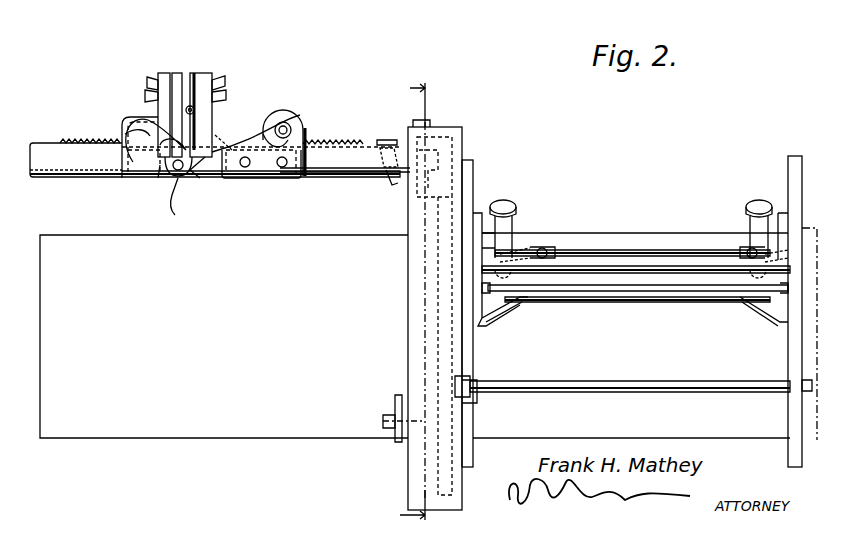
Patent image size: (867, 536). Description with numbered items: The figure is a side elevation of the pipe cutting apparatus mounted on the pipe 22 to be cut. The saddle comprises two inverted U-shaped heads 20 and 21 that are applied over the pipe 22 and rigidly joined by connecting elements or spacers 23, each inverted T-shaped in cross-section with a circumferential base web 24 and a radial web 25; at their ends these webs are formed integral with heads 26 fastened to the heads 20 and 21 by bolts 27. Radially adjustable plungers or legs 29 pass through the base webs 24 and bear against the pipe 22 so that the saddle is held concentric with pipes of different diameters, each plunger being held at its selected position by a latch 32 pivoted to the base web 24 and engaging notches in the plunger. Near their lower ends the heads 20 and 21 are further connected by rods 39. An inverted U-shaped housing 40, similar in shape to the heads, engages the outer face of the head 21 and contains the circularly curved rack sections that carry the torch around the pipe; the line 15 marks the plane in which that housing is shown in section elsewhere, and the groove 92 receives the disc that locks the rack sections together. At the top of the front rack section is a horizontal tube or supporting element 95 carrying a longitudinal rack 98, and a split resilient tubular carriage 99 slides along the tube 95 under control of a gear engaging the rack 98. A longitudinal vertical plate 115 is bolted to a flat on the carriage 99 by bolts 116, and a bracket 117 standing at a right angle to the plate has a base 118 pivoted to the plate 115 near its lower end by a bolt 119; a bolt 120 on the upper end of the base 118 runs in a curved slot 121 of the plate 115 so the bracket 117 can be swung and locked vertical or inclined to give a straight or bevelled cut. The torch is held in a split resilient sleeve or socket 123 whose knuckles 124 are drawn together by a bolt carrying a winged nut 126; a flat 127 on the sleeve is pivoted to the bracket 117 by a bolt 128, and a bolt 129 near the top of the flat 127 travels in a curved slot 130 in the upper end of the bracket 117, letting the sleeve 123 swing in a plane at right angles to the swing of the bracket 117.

The section line 15 is at (401, 301).
The head 20 is at (788, 178).
The head 21 is at (474, 185).
The pipe 22 is at (248, 418).
The connecting elements or spacers 23 is at (631, 284).
The circumferential base web 24 is at (712, 293).
The radial web 25 is at (640, 250).
The heads 26 is at (490, 312).
The bolts 27 is at (498, 300).
The plungers or legs 29 is at (512, 228).
The latch 32 is at (525, 250).
The rods 39 is at (730, 385).
The housing 40 is at (455, 148).
The groove 92 is at (390, 186).
The horizontal tube or supporting element 95 is at (108, 162).
The rack 98 is at (110, 143).
The tubular carriage 99 is at (256, 178).
The longitudinal vertical plate 115 is at (128, 134).
The bolts 116 is at (274, 152).
The bracket 117 is at (200, 80).
The base 118 is at (176, 170).
The bolt 119 is at (178, 178).
The bolt 120 is at (158, 160).
The curved slot 121 is at (278, 118).
The split resilient sleeve or socket 123 is at (150, 78).
The knuckles 124 is at (177, 74).
The winged nut 126 is at (146, 92).
The flat 127 is at (220, 94).
The bolt 128 is at (216, 158).
The bolt 129 is at (218, 80).
The curved slot 130 is at (196, 75).